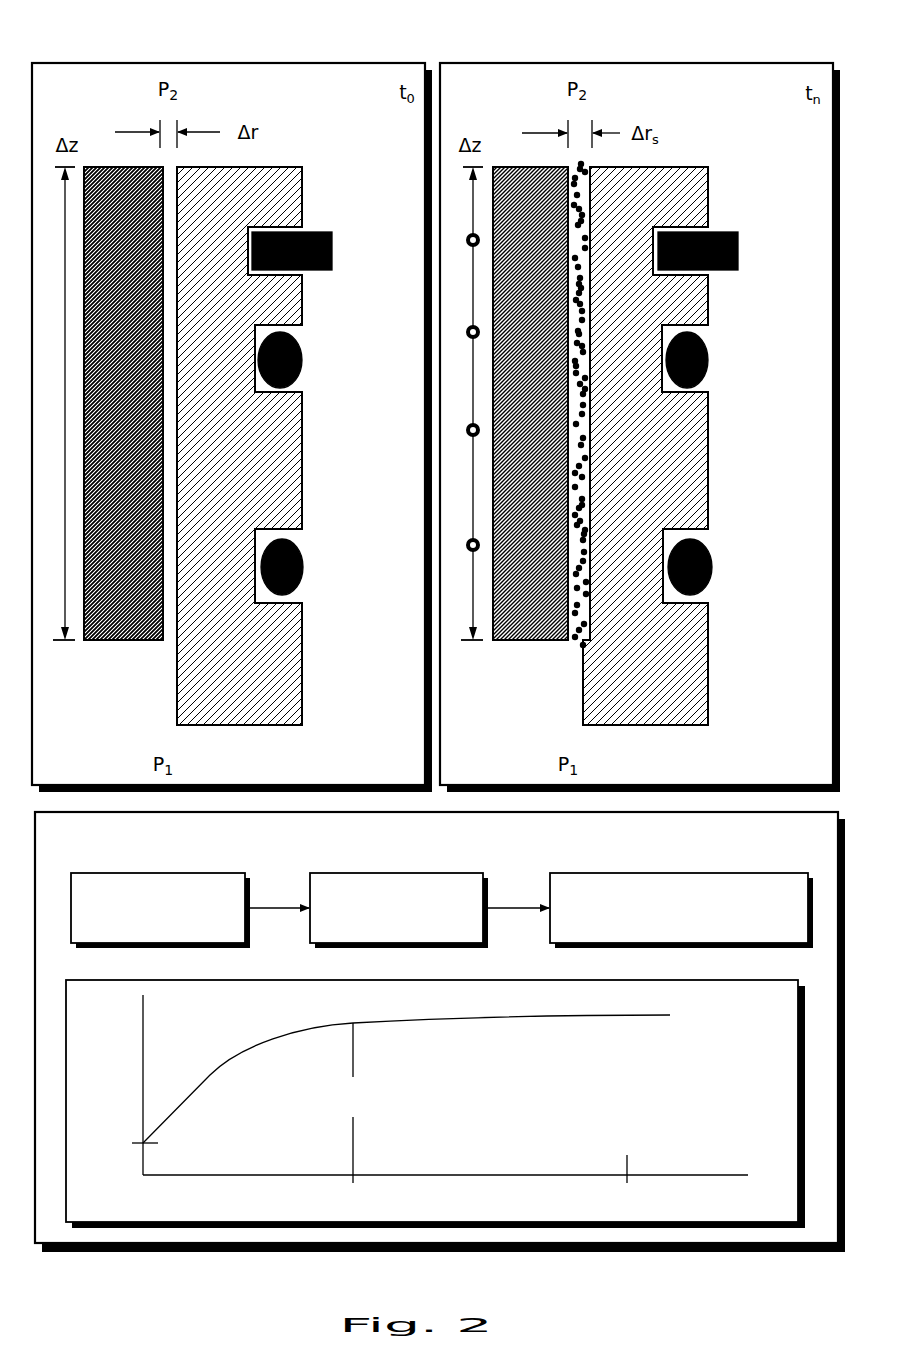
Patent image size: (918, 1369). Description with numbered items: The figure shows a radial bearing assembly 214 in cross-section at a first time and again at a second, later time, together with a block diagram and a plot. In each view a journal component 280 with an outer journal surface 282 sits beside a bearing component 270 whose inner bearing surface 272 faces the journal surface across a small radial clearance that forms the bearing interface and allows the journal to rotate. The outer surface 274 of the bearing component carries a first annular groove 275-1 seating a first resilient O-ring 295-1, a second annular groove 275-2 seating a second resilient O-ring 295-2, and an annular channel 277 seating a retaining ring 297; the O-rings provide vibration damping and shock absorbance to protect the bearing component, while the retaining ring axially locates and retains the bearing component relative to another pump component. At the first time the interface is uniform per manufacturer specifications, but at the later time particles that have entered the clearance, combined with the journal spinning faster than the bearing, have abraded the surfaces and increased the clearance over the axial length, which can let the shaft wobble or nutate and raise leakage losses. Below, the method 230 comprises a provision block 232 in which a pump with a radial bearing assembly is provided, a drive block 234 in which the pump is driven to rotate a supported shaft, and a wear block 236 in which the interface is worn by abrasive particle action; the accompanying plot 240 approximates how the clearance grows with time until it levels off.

The radial bearing assembly 214 is at (435, 360).
The journal component 280 is at (125, 642).
The outer journal surface 282 is at (162, 642).
The inner bearing surface 272 is at (177, 692).
The outer surface 274 is at (302, 663).
The bearing component 270 is at (232, 725).
The retaining ring 297 is at (332, 232).
The annular channel 277 is at (302, 277).
The second resilient O-ring 295-2 is at (302, 362).
The second annular groove 275-2 is at (302, 393).
The first resilient O-ring 295-1 is at (303, 567).
The first annular groove 275-1 is at (302, 605).
The method 230 is at (442, 887).
The provision block 232 is at (160, 910).
The drive block 234 is at (399, 910).
The wear block 236 is at (681, 910).
The plot 240 is at (435, 1104).